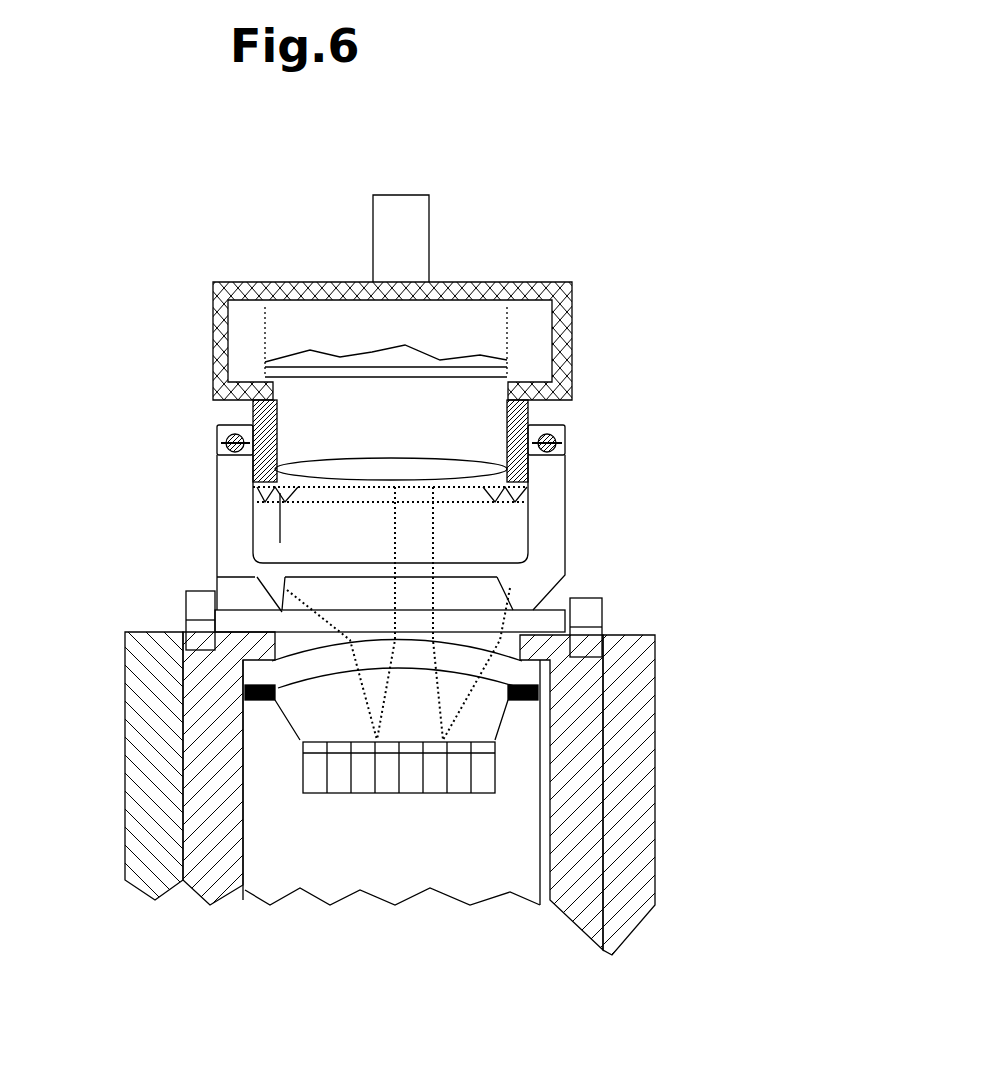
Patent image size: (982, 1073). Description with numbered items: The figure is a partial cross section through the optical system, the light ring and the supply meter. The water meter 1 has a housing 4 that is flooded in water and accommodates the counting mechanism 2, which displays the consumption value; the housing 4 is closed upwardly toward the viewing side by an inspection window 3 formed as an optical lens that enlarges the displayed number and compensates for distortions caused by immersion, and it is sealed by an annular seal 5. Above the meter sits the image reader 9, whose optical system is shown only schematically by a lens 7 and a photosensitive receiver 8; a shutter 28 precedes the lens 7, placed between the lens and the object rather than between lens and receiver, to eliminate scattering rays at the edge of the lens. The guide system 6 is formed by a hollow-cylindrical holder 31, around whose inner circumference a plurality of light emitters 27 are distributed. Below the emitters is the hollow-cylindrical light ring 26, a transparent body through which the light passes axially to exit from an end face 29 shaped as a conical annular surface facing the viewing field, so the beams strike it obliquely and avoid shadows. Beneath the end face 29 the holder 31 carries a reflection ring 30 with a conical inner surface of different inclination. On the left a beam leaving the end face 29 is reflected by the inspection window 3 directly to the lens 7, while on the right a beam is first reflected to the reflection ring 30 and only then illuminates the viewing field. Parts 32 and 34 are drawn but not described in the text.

The water meter 1 is at (658, 676).
The counting mechanism 2 is at (493, 787).
The inspection window 3 is at (300, 663).
The housing 4 is at (563, 868).
The annular seal 5 is at (157, 720).
The guide system 6 is at (514, 565).
The light ring 26 is at (557, 527).
The lens 7 is at (328, 462).
The photosensitive receiver 8 is at (343, 373).
The image reader 9 is at (560, 278).
The light emitters 27 is at (220, 427).
The shutter 28 is at (280, 543).
The end face 29 is at (277, 595).
The reflection ring 30 is at (243, 623).
The holder 31 is at (568, 585).
The spacer 32 is at (592, 612).
The threaded sleeve 34 is at (516, 422).